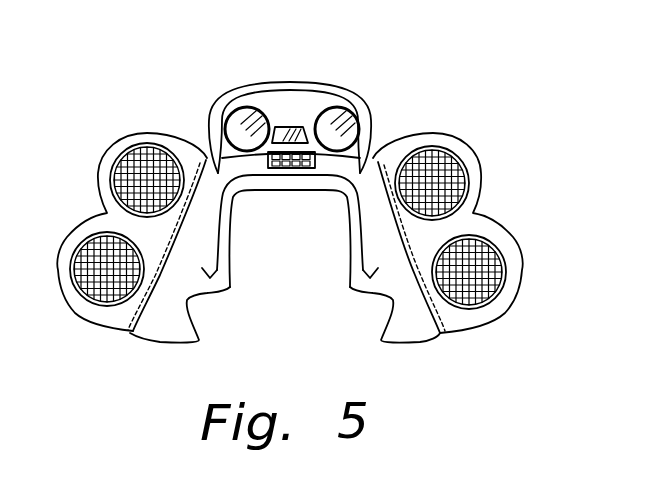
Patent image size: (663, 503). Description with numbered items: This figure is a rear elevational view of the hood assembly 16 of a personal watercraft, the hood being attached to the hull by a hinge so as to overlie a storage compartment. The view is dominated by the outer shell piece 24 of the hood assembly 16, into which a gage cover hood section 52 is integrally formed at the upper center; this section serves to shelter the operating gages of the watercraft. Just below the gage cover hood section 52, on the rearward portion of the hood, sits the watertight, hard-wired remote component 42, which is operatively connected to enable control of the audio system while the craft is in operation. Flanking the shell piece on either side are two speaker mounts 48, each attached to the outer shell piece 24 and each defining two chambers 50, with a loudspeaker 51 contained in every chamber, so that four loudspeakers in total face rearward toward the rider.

The hood assembly 16 is at (327, 110).
The outer shell piece 24 is at (157, 349).
The remote component 42 is at (287, 168).
The speaker mount 48 is at (97, 210).
The chamber 50 is at (147, 148).
The loudspeaker 51 is at (112, 170).
The gage cover hood section 52 is at (338, 107).